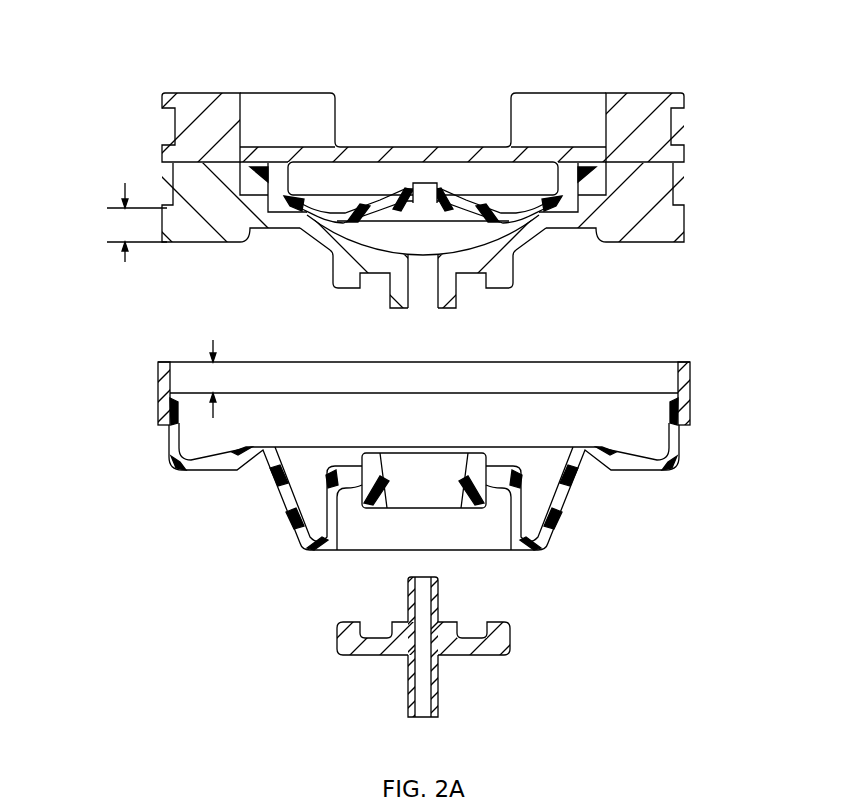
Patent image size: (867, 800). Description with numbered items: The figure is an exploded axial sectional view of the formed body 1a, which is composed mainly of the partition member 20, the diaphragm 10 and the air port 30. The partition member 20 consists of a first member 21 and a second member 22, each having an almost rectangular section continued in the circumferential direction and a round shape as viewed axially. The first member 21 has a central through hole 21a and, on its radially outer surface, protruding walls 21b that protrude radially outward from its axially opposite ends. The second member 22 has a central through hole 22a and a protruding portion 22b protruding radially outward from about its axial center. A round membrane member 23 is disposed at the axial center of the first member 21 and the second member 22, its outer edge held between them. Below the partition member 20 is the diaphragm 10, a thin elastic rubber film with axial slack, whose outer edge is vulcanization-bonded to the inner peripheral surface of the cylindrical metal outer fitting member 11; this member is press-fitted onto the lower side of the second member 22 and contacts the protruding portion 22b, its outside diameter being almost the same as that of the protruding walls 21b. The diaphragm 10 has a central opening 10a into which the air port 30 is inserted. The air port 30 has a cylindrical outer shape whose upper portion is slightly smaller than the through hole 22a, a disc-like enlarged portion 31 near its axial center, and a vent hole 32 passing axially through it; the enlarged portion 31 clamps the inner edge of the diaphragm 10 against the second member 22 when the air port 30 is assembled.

The formed body 1a is at (767, 101).
The partition member 20 is at (98, 101).
The first member 21 is at (451, 137).
The through hole 21a is at (452, 154).
The protruding walls 21b is at (684, 102).
The second member 22 is at (435, 240).
The through hole 22a is at (428, 277).
The protruding portion 22b is at (685, 202).
The membrane member 23 is at (381, 200).
The diaphragm 10 is at (243, 514).
The opening 10a is at (463, 487).
The outer fitting member 11 is at (289, 380).
The air port 30 is at (489, 696).
The enlarged portion 31 is at (500, 640).
The vent hole 32 is at (432, 693).